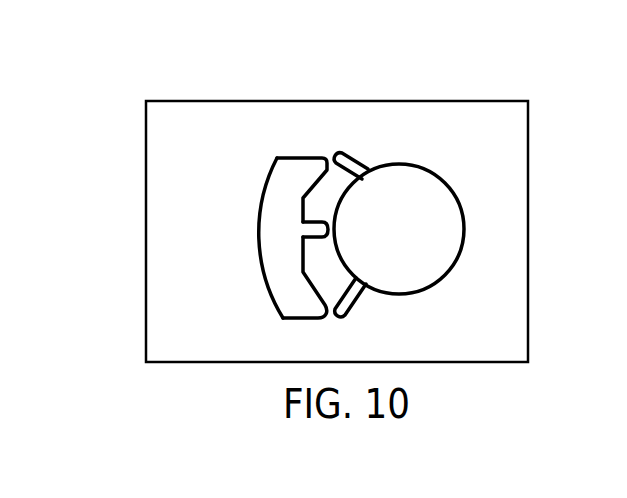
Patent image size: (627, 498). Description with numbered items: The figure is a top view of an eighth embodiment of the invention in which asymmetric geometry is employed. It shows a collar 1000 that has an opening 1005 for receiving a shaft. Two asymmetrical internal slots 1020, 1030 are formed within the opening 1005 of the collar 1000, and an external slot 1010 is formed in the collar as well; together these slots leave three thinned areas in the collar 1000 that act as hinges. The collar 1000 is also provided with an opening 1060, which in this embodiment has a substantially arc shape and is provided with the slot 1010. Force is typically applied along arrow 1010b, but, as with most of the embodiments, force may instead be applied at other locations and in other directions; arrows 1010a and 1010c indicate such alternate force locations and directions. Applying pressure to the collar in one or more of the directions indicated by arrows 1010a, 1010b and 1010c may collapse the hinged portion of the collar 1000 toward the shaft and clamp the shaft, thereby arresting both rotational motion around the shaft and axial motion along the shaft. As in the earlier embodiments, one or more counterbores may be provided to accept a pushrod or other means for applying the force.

The collar 1000 is at (502, 101).
The opening 1005 is at (438, 222).
The external slot 1010 is at (195, 233).
The arrow 1010a is at (308, 181).
The arrow 1010b is at (298, 229).
The arrow 1010c is at (303, 282).
The internal slot 1020 is at (345, 315).
The internal slot 1030 is at (345, 153).
The opening 1060 is at (264, 262).